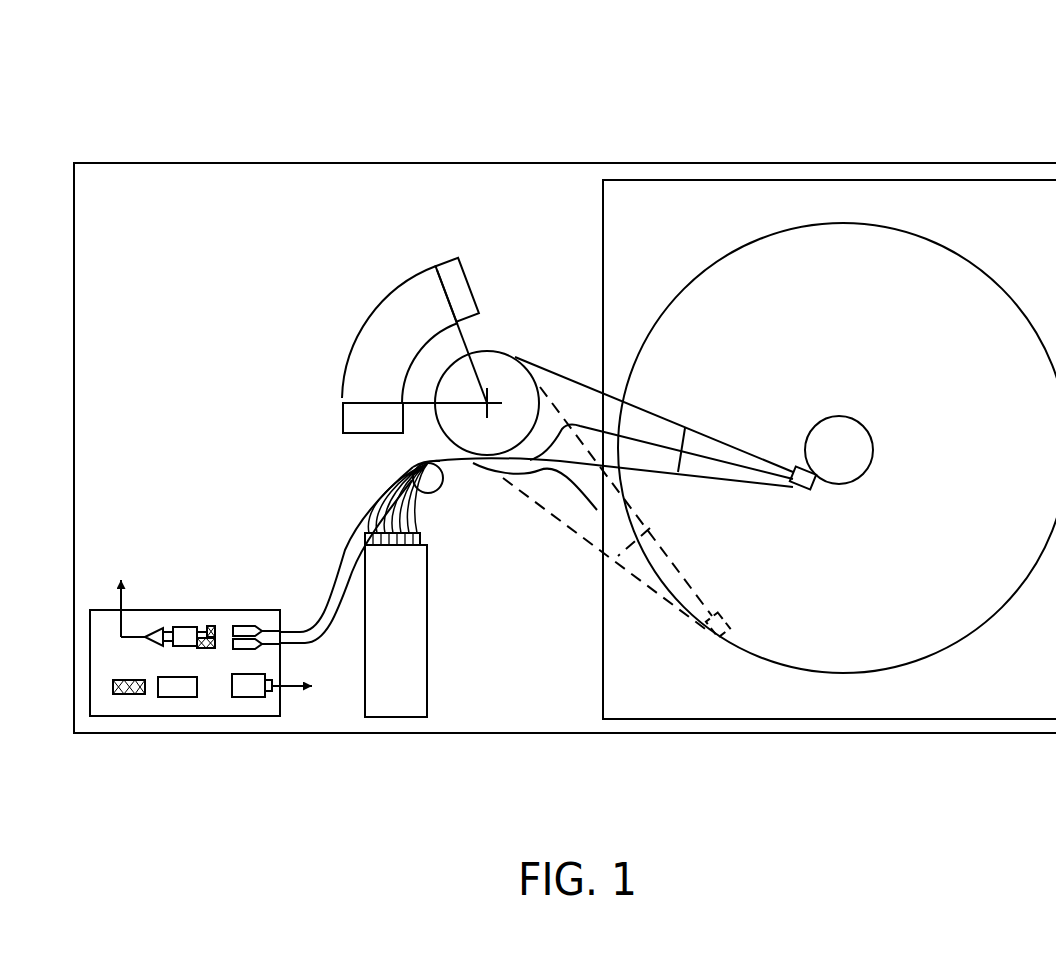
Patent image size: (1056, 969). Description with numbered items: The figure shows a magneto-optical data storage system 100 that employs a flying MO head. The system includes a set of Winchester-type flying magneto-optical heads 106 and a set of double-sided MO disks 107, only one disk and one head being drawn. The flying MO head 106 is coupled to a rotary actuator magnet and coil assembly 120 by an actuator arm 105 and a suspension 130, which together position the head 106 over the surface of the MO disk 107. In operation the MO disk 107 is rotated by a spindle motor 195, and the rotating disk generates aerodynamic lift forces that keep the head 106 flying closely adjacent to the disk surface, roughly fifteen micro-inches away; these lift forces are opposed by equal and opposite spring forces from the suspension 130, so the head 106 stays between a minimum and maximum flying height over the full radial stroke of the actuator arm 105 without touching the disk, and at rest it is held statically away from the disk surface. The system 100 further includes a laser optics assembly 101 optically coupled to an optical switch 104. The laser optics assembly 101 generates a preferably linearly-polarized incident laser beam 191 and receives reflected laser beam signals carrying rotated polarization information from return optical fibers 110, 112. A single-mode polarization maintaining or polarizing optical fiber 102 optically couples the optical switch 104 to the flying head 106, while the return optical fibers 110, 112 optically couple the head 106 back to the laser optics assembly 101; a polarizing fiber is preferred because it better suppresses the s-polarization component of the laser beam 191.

The magneto-optical data storage system 100 is at (1012, 59).
The laser optics assembly 101 is at (150, 700).
The single-mode polarization maintaining or polarizing optical fiber 102 is at (378, 482).
The optical switch 104 is at (434, 614).
The actuator arm 105 is at (659, 430).
The flying magneto-optical head 106 is at (811, 492).
The double-sided MO disk 107 is at (858, 222).
The return optical fiber 110 is at (302, 644).
The return optical fiber 112 is at (315, 613).
The rotary actuator magnet and coil assembly 120 is at (437, 270).
The suspension 130 is at (738, 457).
The incident laser beam 191 is at (286, 697).
The spindle motor 195 is at (838, 442).